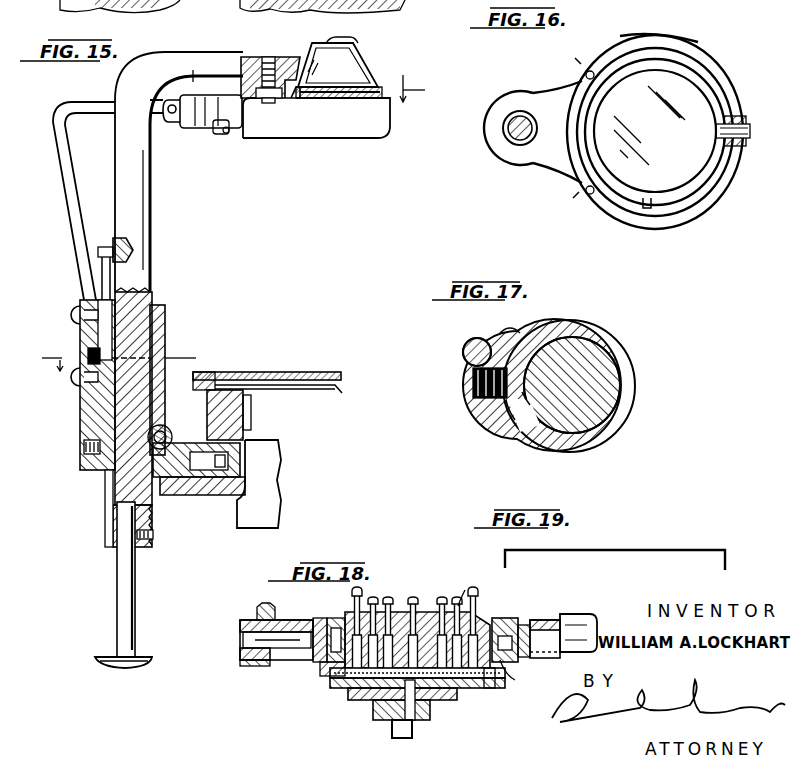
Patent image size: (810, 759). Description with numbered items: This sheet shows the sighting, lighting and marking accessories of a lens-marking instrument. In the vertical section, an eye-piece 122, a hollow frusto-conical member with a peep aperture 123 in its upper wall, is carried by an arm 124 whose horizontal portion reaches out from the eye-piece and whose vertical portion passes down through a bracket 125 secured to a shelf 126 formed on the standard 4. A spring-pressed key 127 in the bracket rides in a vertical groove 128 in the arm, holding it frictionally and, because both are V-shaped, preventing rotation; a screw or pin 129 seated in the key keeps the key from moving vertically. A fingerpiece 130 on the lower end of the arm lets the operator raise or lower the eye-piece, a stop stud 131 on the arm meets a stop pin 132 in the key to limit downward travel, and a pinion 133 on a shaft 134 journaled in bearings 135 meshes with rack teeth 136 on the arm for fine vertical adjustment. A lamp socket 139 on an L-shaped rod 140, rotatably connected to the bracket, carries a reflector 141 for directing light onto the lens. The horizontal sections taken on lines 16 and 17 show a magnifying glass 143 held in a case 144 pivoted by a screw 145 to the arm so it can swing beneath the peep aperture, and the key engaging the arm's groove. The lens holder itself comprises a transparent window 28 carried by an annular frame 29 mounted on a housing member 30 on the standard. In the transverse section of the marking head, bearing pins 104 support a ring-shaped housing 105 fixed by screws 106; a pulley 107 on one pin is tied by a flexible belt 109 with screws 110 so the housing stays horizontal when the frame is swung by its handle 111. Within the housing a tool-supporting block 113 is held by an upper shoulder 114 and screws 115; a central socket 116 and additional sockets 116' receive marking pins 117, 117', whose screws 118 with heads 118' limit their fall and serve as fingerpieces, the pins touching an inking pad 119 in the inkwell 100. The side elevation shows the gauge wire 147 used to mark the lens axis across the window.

In FIG. 15, the standard 4 is at (268, 494).
In FIG. 15, the section line 16— 16 is at (315, 76).
In FIG. 15, the section line 17— 17 is at (119, 361).
In FIG. 15, the transparent window or table 28 is at (290, 373).
In FIG. 15, the annular frame 29 is at (325, 390).
In FIG. 15, the housing member 30 is at (243, 412).
In FIG. 18, the inkwell 100 is at (508, 682).
In FIG. 18, the bearing pins 104 is at (300, 646).
In FIG. 18, the ring-shaped housing 105 is at (334, 619).
In FIG. 18, the screws 106 is at (310, 622).
In FIG. 18, the circular disc or pulley 107 is at (255, 660).
In FIG. 18, the flexible metal strap or belt 109 is at (263, 666).
In FIG. 18, the screws 110 is at (264, 606).
In FIG. 18, the handle 111 is at (571, 618).
In FIG. 18, the tool-supporting block 113 is at (426, 616).
In FIG. 18, the upper shoulder 114 is at (495, 626).
In FIG. 18, the screws 115 is at (490, 688).
In FIG. 18, the central coaxial socket 116 is at (384, 709).
In FIG. 18, the additional sockets 116' is at (383, 625).
In FIG. 18, the marking pin 117 is at (417, 694).
In FIG. 18, the marking pins 117' is at (472, 587).
In FIG. 18, the screws 118 is at (415, 620).
In FIG. 18, the screw heads 118' is at (493, 629).
In FIG. 18, the inking pad 119 is at (330, 678).
In FIG. 15, the eye-piece 122 is at (372, 70).
In FIG. 15, the peep aperture 123 is at (333, 50).
In FIG. 15, the arm 124 is at (140, 208).
In FIG. 17, the arm 124 is at (607, 396).
In FIG. 15, the bracket 125 is at (165, 331).
In FIG. 17, the bracket 125 is at (625, 365).
In FIG. 15, the shelf 126 is at (210, 496).
In FIG. 15, the spring-pressed key 127 is at (102, 473).
In FIG. 17, the spring-pressed key 127 is at (508, 438).
In FIG. 17, the groove 128 is at (535, 430).
In FIG. 15, the screw or pin 129 is at (82, 470).
In FIG. 15, the fingerpiece 130 is at (128, 660).
In FIG. 15, the stop stud 131 is at (106, 248).
In FIG. 15, the stop pin 132 is at (102, 275).
In FIG. 15, the pinion 133 is at (166, 428).
In FIG. 15, the shaft 134 is at (170, 438).
In FIG. 15, the bearings 135 is at (238, 454).
In FIG. 15, the rack teeth 136 is at (152, 540).
In FIG. 15, the lamp socket 139 is at (193, 126).
In FIG. 15, the L-shaped rod 140 is at (68, 158).
In FIG. 17, the L-shaped rod 140 is at (466, 344).
In FIG. 15, the reflector 141 is at (327, 128).
In FIG. 15, the magnifying glass 143 is at (349, 99).
In FIG. 16, the magnifying glass 143 is at (655, 131).
In FIG. 15, the case 144 is at (297, 99).
In FIG. 16, the case 144 is at (733, 98).
In FIG. 15, the screw 145 is at (266, 104).
In FIG. 16, the screw 145 is at (522, 142).
In FIG. 19, the wire 147 is at (657, 550).